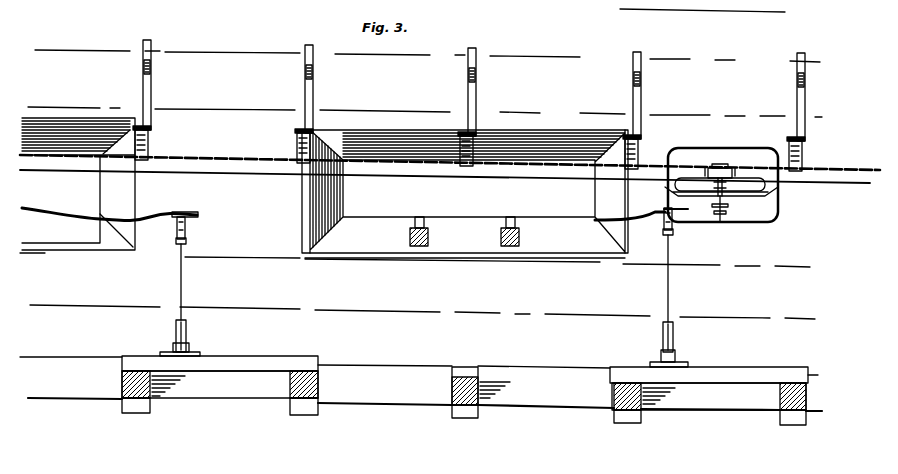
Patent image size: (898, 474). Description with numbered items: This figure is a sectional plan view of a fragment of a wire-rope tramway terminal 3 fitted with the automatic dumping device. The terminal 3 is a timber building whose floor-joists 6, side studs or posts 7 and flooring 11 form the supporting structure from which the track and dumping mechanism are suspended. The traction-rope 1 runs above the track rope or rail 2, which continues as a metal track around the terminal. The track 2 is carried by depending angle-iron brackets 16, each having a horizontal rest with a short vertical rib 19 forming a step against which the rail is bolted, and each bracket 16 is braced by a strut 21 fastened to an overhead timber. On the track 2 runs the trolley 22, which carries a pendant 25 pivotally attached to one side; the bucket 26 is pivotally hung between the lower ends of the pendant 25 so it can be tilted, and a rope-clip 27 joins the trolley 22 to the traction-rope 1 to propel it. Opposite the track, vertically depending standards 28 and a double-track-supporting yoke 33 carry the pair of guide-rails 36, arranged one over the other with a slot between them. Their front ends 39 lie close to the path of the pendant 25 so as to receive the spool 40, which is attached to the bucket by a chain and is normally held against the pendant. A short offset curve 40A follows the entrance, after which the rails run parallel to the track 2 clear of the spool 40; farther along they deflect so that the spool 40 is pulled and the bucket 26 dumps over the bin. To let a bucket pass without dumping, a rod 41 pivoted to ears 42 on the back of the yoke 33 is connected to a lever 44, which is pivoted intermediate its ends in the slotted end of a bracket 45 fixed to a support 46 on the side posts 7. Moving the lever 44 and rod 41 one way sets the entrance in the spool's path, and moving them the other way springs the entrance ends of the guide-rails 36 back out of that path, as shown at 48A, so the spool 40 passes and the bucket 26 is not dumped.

The traction-rope 1 is at (212, 156).
The track rope or rail 2 is at (260, 176).
The terminal 3 is at (230, 85).
The floor-joists 6 is at (300, 413).
The side studs or posts 7 is at (290, 388).
The flooring 11 is at (421, 210).
The angle-iron bracket 16 is at (149, 152).
The vertical rib 19 is at (146, 162).
The strut 21 is at (151, 86).
The trolley 22 is at (690, 178).
The pendant 25 is at (668, 196).
The bucket 26 is at (719, 148).
The rope-clip 27 is at (734, 172).
The depending standard 28 is at (410, 238).
The double-track-supporting yoke 33 is at (186, 229).
The guide-rail 36 is at (60, 212).
The front ends of the guide-rails 39 is at (685, 211).
The spool 40 is at (721, 222).
The offset curve 40A is at (629, 218).
The rod 41 is at (182, 284).
The ears 42 is at (175, 241).
The lever 44 is at (186, 339).
The bracket 45 is at (168, 352).
The support 46 is at (248, 365).
The sprung-aside position of guide-rails 48A is at (197, 217).